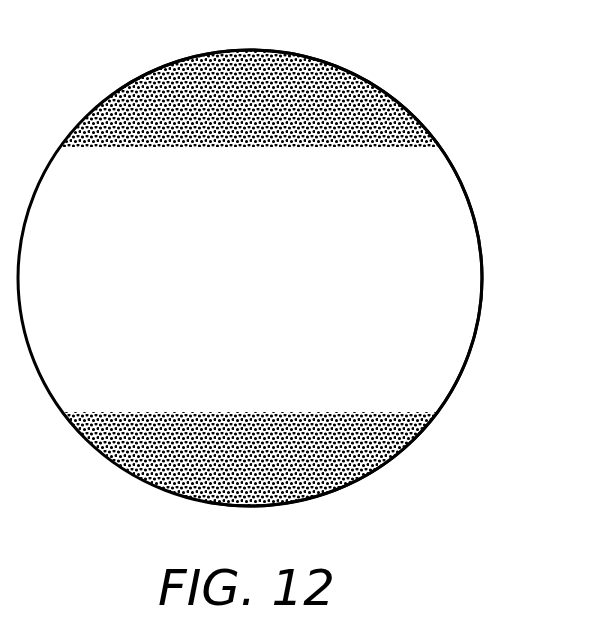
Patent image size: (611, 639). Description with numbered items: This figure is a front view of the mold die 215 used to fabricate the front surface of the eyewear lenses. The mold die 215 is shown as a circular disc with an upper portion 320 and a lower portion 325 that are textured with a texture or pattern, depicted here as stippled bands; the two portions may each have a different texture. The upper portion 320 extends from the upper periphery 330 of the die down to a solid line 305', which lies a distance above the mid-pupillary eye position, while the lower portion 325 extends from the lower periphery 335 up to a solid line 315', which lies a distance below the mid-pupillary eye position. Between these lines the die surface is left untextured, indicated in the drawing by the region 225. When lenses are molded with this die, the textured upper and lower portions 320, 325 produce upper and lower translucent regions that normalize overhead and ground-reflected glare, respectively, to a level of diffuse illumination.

The mold die 215 is at (588, 64).
The ball body 225 is at (413, 232).
The solid line 305' is at (441, 132).
The solid line 315' is at (487, 356).
The upper portion 320 is at (312, 88).
The lower portion 325 is at (380, 452).
The upper periphery 330 is at (183, 58).
The lower periphery 335 is at (277, 507).